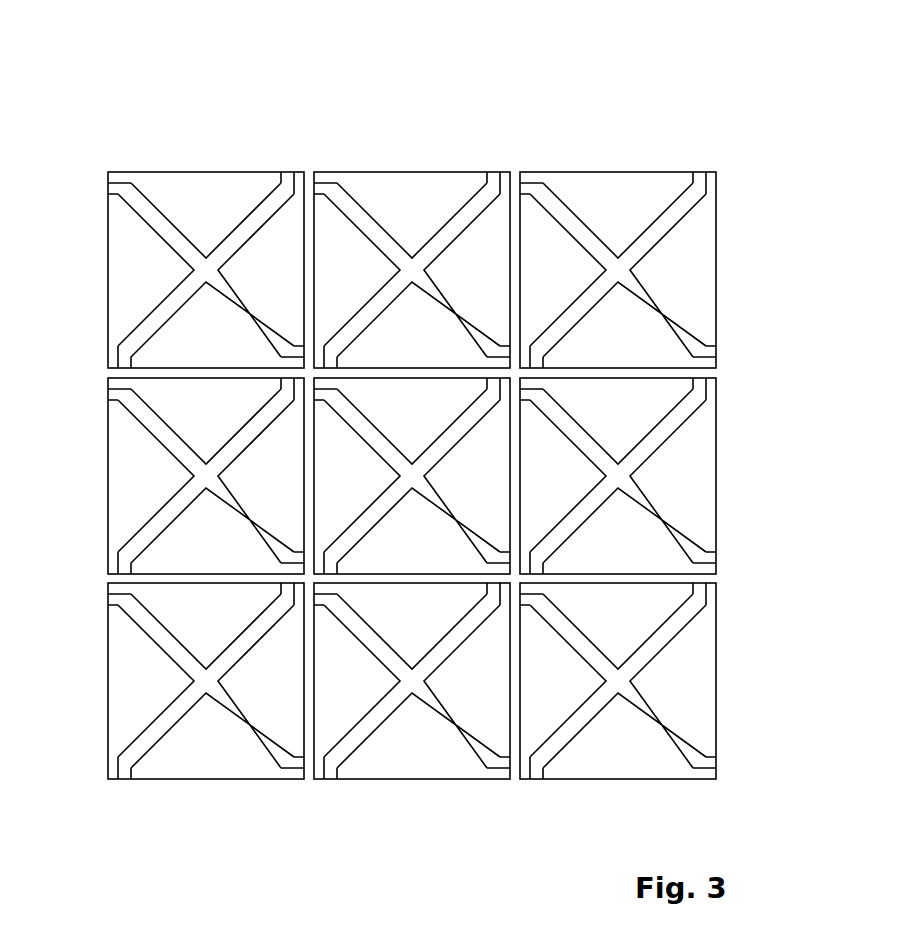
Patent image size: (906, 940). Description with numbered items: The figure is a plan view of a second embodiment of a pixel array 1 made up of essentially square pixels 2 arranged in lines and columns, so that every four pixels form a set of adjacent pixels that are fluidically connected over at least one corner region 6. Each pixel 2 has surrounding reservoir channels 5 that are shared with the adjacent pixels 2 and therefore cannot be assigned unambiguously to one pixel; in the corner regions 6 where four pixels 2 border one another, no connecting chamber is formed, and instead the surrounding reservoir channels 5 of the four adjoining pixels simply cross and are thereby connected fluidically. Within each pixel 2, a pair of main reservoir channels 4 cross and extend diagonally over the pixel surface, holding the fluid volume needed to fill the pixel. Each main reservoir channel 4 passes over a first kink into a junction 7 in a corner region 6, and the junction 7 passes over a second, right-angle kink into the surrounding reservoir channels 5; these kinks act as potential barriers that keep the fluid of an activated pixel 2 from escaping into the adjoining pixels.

The lattice structure 1 is at (542, 78).
The pixel 2 is at (207, 172).
The main reservoir channel 4 is at (134, 205).
The surrounding reservoir channel 5 is at (311, 187).
The corner region 6 is at (322, 338).
The junction 7 is at (289, 174).